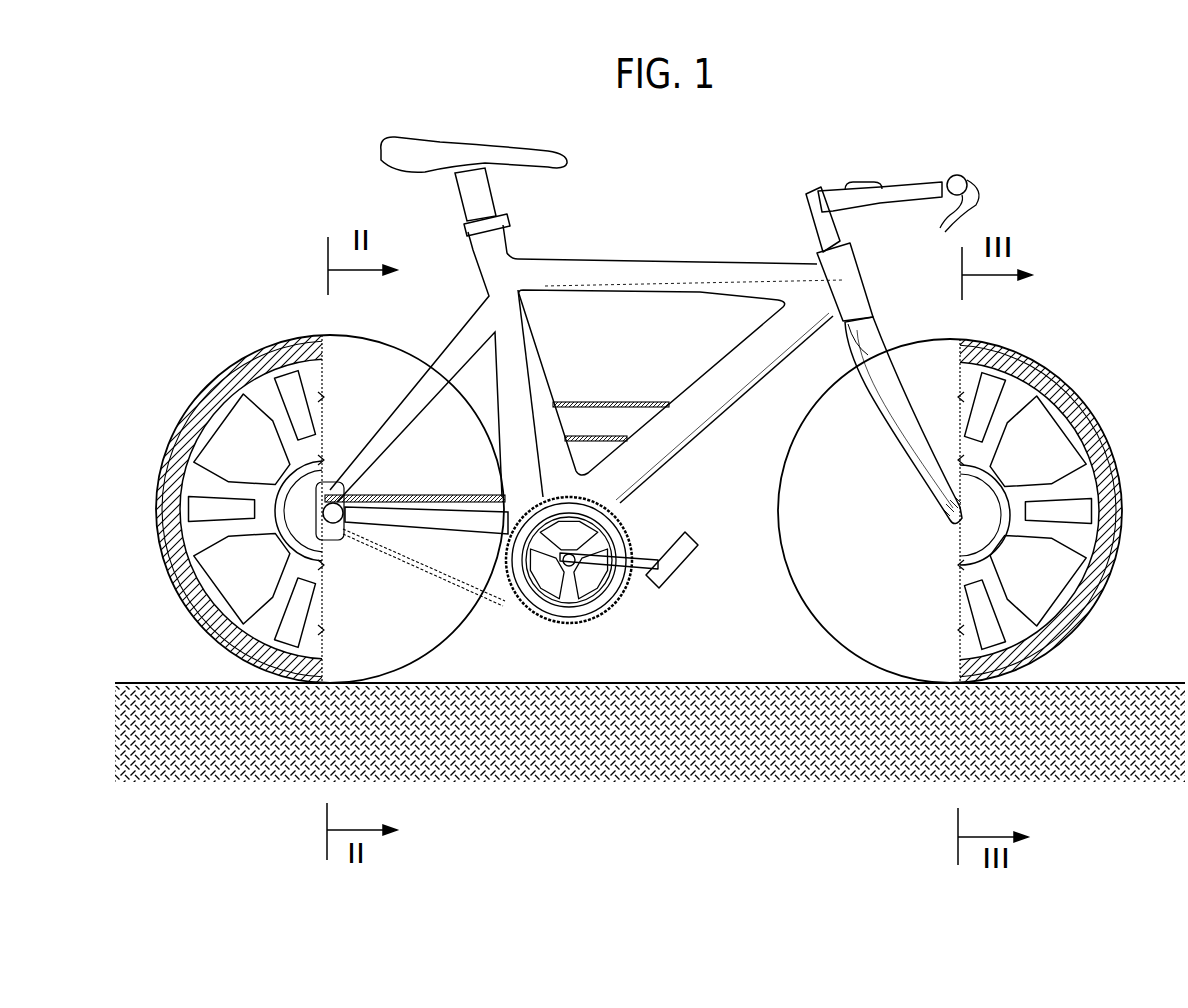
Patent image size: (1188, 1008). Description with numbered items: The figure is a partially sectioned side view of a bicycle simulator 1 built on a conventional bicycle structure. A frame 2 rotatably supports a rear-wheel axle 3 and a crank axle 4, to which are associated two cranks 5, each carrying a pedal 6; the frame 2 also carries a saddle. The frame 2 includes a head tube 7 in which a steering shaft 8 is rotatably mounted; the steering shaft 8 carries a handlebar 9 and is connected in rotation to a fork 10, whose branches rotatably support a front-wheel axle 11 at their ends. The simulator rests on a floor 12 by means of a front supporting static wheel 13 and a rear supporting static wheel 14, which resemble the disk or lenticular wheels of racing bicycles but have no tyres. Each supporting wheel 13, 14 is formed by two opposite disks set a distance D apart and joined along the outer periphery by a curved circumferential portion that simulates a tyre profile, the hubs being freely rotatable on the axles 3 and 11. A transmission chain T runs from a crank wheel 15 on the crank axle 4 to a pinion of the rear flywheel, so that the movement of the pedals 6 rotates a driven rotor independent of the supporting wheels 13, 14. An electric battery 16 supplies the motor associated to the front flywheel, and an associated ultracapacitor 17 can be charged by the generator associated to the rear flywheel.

The bicycle simulator 1 is at (655, 403).
The frame 2 is at (601, 320).
The rear-wheel axle 3 is at (412, 516).
The crank axle 4 is at (609, 585).
The crank 5 is at (648, 548).
The pedal 6 is at (670, 568).
The head tube 7 is at (808, 283).
The steering shaft 8 is at (808, 228).
The handlebar 9 is at (902, 182).
The fork 10 is at (878, 421).
The front-wheel axle 11 is at (946, 499).
The floor 12 is at (715, 685).
The front supporting static wheel 13 is at (1077, 385).
The rear supporting static wheel 14 is at (205, 380).
The crank wheel 15 is at (563, 628).
The electric battery 16 is at (593, 455).
The ultracapacitor 17 is at (585, 410).
The transmission chain T is at (432, 490).
The distance between disks D is at (433, 638).